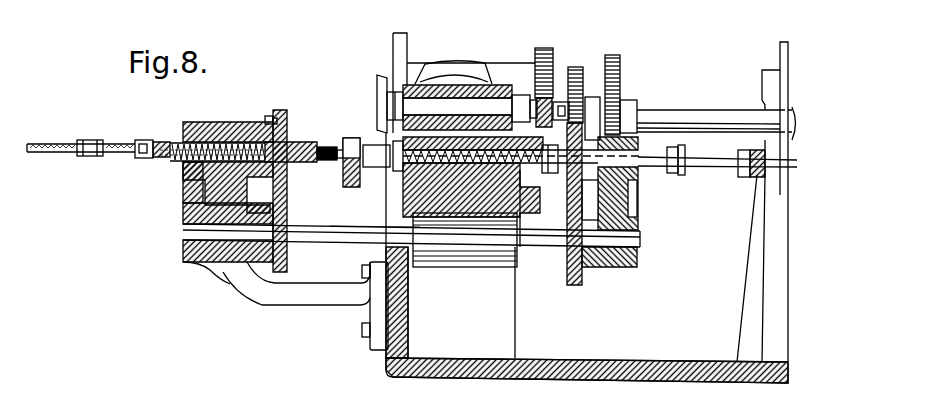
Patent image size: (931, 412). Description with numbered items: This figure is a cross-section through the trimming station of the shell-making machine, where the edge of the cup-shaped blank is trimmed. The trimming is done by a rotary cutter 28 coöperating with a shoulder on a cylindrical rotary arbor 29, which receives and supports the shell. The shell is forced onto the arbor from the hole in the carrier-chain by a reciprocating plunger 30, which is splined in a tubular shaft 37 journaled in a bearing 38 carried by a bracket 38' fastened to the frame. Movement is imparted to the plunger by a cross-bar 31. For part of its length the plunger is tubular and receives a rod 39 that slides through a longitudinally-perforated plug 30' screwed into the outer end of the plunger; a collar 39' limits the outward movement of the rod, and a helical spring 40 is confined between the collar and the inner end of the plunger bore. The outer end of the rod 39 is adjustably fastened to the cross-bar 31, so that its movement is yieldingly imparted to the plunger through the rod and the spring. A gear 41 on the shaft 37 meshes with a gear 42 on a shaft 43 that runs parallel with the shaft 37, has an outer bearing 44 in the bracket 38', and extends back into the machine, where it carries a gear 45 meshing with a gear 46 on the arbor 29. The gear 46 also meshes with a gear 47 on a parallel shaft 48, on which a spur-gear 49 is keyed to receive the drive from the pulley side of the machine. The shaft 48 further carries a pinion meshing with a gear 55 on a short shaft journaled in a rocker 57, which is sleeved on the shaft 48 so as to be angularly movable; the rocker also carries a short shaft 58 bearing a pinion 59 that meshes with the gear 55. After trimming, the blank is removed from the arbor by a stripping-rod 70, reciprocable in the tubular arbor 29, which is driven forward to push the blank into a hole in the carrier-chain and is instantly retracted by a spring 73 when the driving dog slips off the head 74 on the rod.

The rotary cutter 28 is at (378, 100).
The cylindrical rotary arbor 29 is at (384, 170).
The reciprocating plunger 30 is at (312, 154).
The longitudinally-perforated plug 30' is at (141, 163).
The cross-bar 31 is at (88, 141).
The tubular shaft 37 is at (186, 142).
The bearing 38 is at (228, 183).
The bracket 38' is at (305, 306).
The rod 39 is at (212, 174).
The collar 39' is at (152, 177).
The helical spring 40 is at (267, 120).
The gear 41 is at (288, 118).
The gear 42 is at (411, 224).
The shaft 43 is at (342, 227).
The outer bearing 44 is at (184, 259).
The gear 45 is at (567, 275).
The gear 46 is at (570, 189).
The gear 47 is at (578, 67).
The shaft 48 is at (690, 112).
The spur-gear 49 is at (633, 95).
The gear 55 is at (545, 48).
The rocker 57 is at (468, 63).
The short shaft 58 is at (462, 107).
The pinion 59 is at (560, 102).
The stripping-rod 70 is at (653, 168).
The spring 73 is at (526, 186).
The head 74 is at (674, 176).